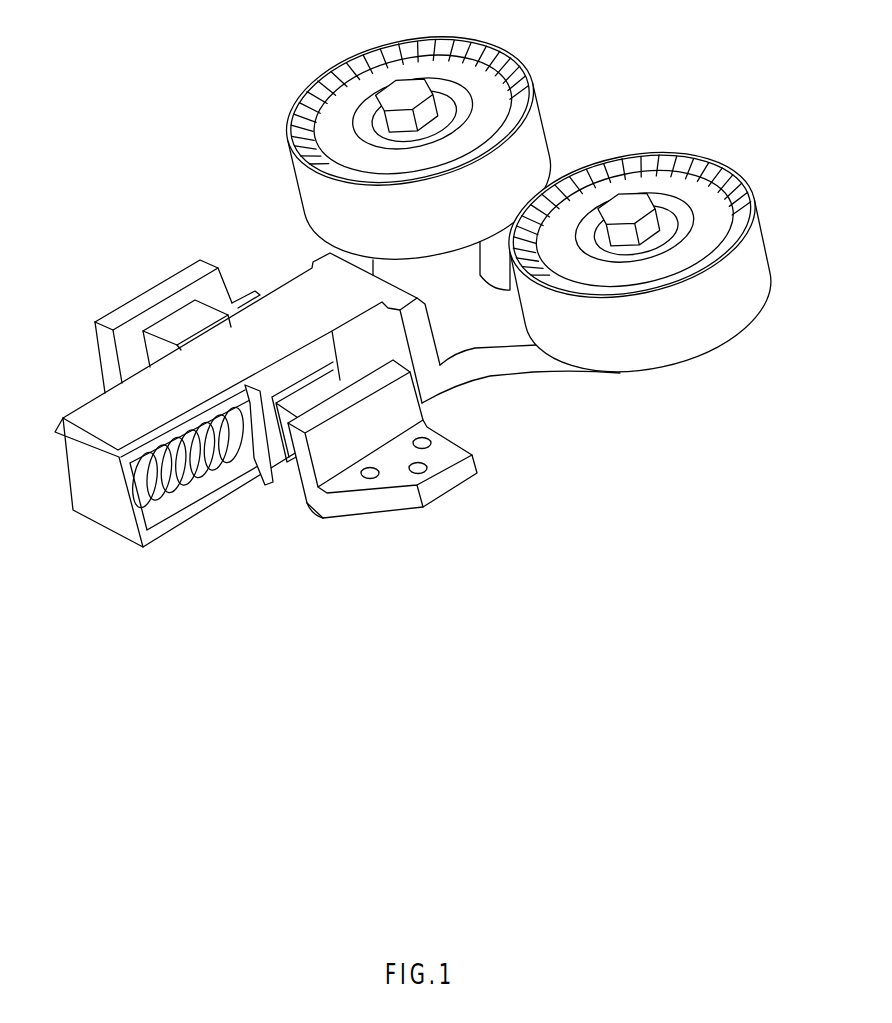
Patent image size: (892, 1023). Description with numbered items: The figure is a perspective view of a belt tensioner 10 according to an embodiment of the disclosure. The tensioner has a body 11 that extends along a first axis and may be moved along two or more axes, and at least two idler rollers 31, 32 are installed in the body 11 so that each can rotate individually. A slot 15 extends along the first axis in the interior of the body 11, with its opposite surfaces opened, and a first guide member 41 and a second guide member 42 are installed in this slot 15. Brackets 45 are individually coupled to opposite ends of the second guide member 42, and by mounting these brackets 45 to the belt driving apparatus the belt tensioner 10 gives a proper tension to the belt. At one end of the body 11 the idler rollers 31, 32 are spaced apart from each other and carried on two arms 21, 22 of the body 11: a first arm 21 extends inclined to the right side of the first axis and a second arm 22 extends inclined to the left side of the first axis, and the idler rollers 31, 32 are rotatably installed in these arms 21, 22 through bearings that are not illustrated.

The belt tensioner 10 is at (83, 94).
The body 11 is at (100, 420).
The slot 15 is at (180, 499).
The first arm 21 is at (513, 363).
The second arm 22 is at (433, 273).
The idler roller 31 is at (757, 250).
The idler roller 32 is at (535, 133).
The first guide member 41 is at (250, 437).
The second guide member 42 is at (182, 318).
The bracket 45 is at (145, 298).